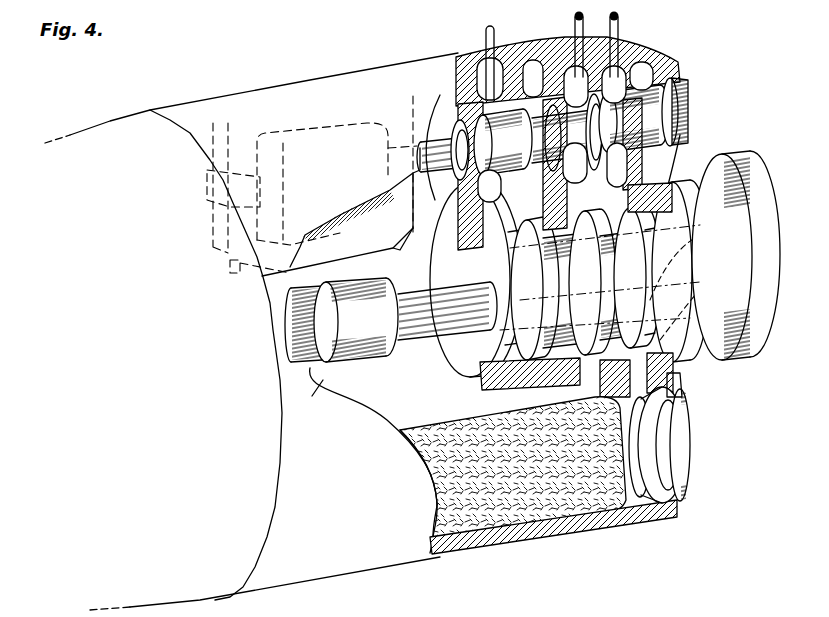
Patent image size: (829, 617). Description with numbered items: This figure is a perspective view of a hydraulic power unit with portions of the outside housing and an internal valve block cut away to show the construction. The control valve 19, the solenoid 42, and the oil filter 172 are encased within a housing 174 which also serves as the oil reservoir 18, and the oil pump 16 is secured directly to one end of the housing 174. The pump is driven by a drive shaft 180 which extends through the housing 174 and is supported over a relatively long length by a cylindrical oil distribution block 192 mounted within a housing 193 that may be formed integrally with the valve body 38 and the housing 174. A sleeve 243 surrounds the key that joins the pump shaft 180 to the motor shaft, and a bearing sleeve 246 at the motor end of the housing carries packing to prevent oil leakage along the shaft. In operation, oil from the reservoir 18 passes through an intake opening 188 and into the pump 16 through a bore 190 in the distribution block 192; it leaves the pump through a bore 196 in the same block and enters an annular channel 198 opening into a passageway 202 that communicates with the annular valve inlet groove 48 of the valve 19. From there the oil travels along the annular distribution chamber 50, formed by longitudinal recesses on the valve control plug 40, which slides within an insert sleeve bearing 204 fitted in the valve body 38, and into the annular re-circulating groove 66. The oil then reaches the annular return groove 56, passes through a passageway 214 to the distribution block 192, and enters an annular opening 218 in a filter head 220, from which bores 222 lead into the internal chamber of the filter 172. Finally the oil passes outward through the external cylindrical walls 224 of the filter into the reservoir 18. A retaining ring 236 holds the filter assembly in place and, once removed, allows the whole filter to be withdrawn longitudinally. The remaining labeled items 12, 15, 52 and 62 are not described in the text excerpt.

The drive assembly 12 is at (333, 60).
The housing 15 is at (120, 130).
The oil pump 16 is at (720, 195).
The oil reservoir 18 is at (467, 405).
The control valve 19 is at (452, 231).
The valve body 38 is at (490, 204).
The valve control plug 40 is at (672, 100).
The solenoid 42 is at (330, 268).
The annular valve inlet groove 48 is at (530, 90).
The annular distribution chamber 50 is at (548, 75).
The retainer slot 52 is at (572, 208).
The annular return groove 56 is at (605, 70).
The housing end block 62 is at (627, 80).
The annular re-circulating groove 66 is at (483, 190).
The oil filter 172 is at (438, 420).
The housing 174 is at (566, 535).
The drive shaft 180 is at (416, 316).
The intake opening 188 is at (575, 378).
The bore 190 is at (700, 266).
The cylindrical oil distribution block 192 is at (495, 272).
The housing 193 is at (480, 386).
The bore 196 is at (688, 238).
The annular channel 198 is at (530, 243).
The passageway 202 is at (533, 210).
The insert sleeve bearing 204 is at (455, 125).
The passageway 214 is at (627, 189).
The annular opening 218 is at (658, 483).
The filter head 220 is at (678, 418).
The bores 222 is at (630, 482).
The external cylindrical walls 224 is at (447, 498).
The retaining ring 236 is at (684, 385).
The sleeve 243 is at (348, 350).
The bearing sleeve 246 is at (318, 378).